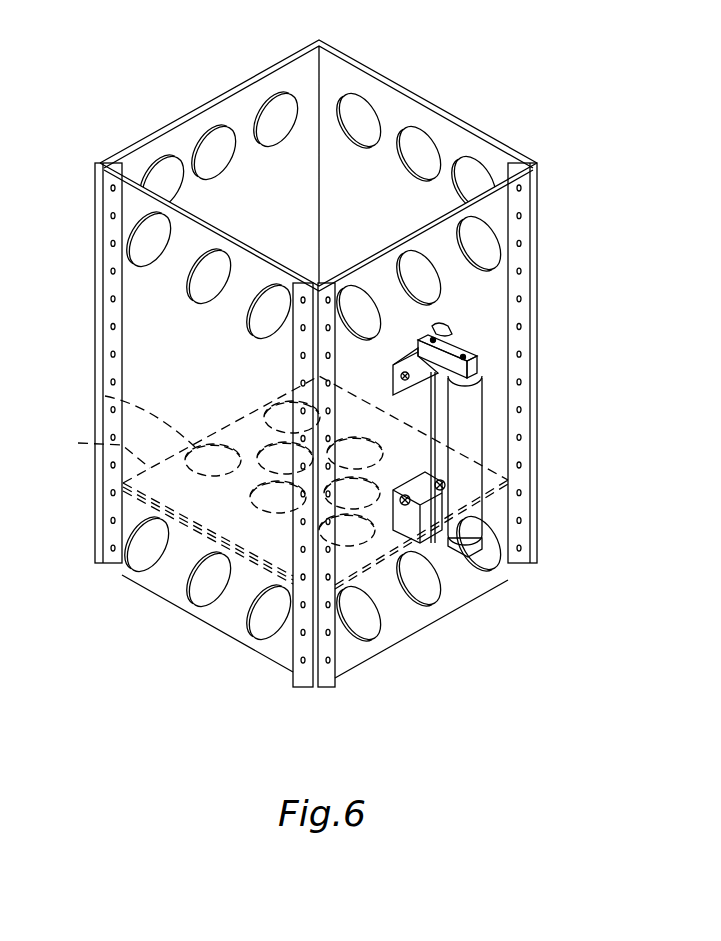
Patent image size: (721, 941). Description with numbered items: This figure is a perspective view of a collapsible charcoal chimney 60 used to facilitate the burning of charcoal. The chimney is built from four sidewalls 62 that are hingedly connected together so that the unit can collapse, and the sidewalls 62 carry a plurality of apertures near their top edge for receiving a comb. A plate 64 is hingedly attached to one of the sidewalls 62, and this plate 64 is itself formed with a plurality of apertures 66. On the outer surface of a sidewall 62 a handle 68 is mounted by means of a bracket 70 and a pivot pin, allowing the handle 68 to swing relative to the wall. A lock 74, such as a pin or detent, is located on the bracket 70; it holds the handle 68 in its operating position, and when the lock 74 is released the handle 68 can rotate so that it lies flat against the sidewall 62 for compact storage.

The collapsible charcoal chimney 60 is at (126, 60).
The sidewalls 62 is at (492, 290).
The plate 64 is at (278, 482).
The apertures 66 is at (105, 396).
The handle 68 is at (140, 354).
The bracket 70 is at (470, 350).
The lock 74 is at (440, 330).